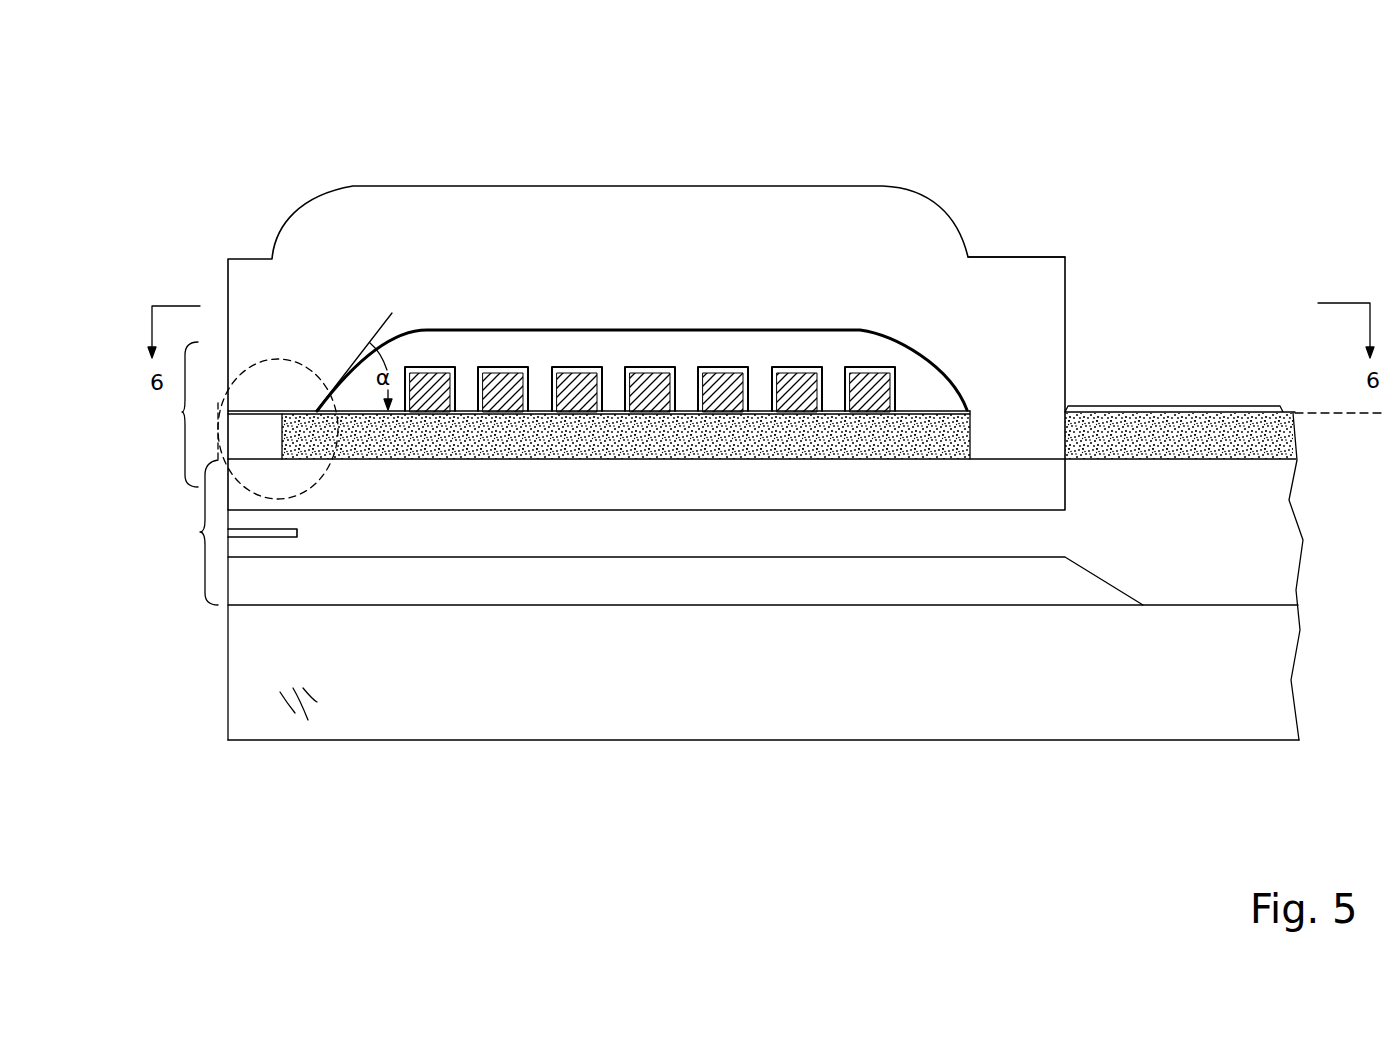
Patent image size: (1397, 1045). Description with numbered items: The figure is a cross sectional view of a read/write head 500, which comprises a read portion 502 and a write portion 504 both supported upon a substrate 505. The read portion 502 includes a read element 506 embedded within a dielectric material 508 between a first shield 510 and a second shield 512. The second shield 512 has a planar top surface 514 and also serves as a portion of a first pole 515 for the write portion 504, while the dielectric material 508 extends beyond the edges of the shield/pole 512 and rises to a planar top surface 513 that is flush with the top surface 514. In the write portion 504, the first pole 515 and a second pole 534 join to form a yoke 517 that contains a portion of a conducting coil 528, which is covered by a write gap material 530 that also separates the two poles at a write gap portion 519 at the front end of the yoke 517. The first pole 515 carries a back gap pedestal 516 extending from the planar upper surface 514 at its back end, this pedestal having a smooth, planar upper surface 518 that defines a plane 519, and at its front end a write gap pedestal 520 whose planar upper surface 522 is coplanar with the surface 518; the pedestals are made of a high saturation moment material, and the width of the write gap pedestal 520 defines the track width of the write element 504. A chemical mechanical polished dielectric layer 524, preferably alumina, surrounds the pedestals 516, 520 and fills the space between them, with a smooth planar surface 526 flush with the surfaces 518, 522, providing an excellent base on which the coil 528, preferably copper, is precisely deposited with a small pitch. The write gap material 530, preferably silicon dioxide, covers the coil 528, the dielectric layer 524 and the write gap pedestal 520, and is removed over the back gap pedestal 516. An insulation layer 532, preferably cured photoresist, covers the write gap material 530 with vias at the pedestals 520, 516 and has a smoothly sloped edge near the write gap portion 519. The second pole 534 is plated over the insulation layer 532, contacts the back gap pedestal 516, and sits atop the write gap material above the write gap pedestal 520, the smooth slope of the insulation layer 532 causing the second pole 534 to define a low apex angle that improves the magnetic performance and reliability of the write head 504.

The read/write head 500 is at (1228, 145).
The read portion 502 is at (186, 532).
The write portion 504 is at (167, 414).
The substrate 505 is at (293, 707).
The read element 506 is at (300, 535).
The dielectric material 508 is at (995, 530).
The first shield 510 is at (755, 593).
The second shield 512 is at (880, 490).
The planar top surface 513 is at (1280, 455).
The planar top surface 514 is at (684, 450).
The first pole 515 is at (1048, 514).
The back gap pedestal 516 is at (1013, 438).
The yoke 517 is at (968, 240).
The planar upper surface 518 is at (1037, 410).
The write gap portion 519 is at (280, 357).
The write gap pedestal 520 is at (258, 437).
The planar upper surface 522 is at (255, 410).
The CMP dielectric layer 524 is at (908, 430).
The smooth planar surface 526 is at (940, 420).
The conducting coil 528 is at (430, 358).
The write gap material 530 is at (358, 385).
The insulation layer 532 is at (507, 347).
The second pole 534 is at (597, 277).